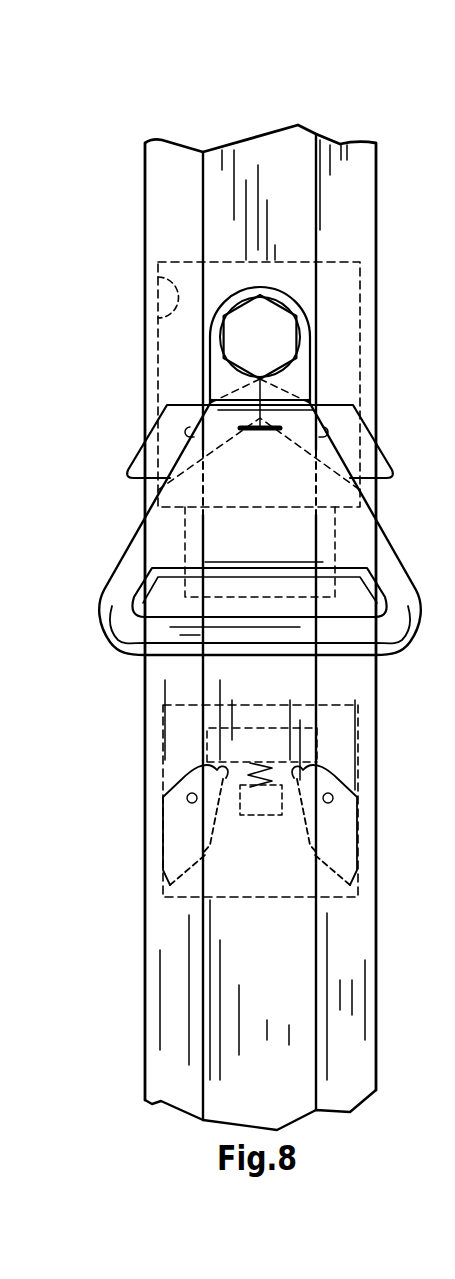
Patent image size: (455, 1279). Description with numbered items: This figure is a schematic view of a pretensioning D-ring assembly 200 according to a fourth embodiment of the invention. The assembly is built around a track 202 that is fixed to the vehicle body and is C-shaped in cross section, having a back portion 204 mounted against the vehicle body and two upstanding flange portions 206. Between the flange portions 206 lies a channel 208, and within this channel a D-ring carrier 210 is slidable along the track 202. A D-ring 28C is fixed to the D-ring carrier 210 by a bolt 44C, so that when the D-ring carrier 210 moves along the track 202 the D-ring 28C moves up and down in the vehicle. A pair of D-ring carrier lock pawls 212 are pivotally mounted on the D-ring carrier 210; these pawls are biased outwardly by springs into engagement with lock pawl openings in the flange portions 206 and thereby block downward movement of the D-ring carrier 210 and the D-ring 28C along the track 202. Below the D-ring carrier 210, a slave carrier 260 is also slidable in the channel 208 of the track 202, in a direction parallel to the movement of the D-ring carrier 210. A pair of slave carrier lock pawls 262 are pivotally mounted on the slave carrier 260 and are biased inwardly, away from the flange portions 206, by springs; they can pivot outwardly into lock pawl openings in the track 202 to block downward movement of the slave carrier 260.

The pretensioning D-ring assembly 200 is at (250, 571).
The track 202 is at (138, 201).
The back portion 204 is at (265, 148).
The flange portions 206 is at (168, 213).
The channel 208 is at (158, 318).
The D-ring carrier 210 is at (282, 279).
The bolt 44C is at (243, 338).
The D-ring carrier lock pawls 212 is at (134, 470).
The D-ring 28C is at (125, 562).
The slave carrier 260 is at (165, 886).
The slave carrier lock pawls 262 is at (160, 832).